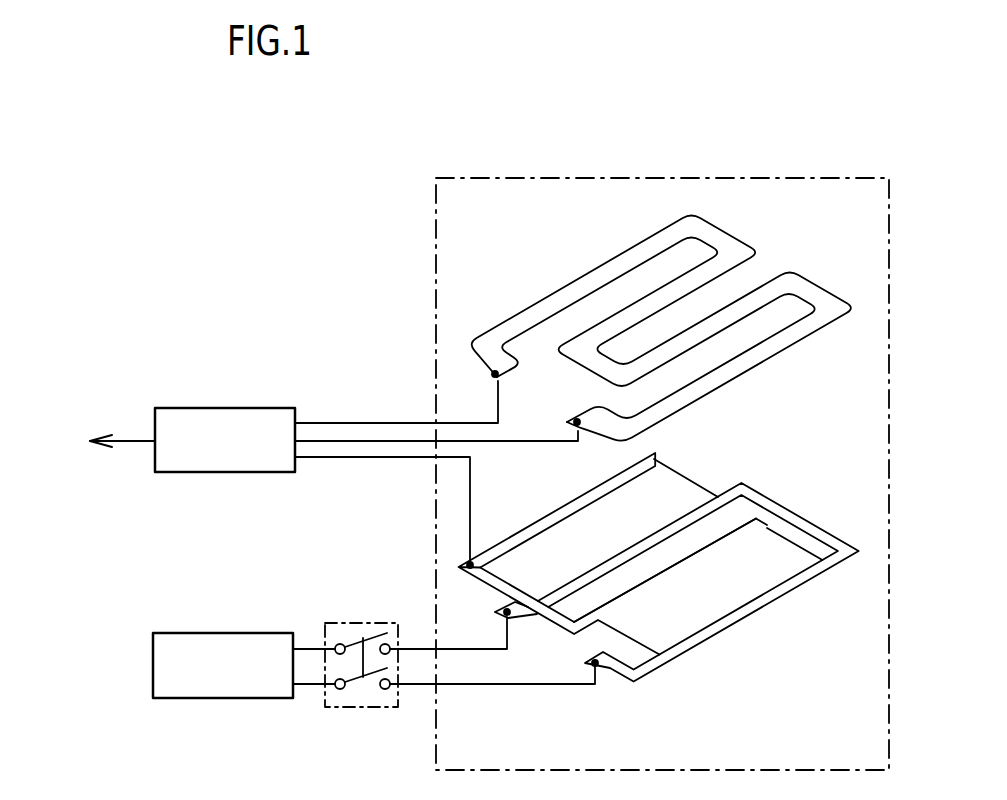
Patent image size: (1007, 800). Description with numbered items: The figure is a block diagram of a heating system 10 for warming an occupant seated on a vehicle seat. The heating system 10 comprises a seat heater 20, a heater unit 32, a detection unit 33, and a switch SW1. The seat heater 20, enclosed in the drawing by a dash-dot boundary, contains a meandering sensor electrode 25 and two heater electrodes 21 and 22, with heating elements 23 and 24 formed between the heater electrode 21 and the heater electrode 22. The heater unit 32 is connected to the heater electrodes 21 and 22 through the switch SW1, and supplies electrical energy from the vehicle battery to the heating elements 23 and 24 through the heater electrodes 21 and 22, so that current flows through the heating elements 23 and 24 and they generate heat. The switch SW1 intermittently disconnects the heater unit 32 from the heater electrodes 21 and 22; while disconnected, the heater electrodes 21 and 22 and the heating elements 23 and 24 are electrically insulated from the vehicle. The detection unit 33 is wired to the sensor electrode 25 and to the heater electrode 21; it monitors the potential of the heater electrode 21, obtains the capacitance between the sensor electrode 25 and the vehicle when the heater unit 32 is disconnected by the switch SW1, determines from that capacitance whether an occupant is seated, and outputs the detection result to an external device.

The heating system 10 is at (250, 253).
The seat heater 20 is at (477, 178).
The heater electrode 21 is at (654, 455).
The heater electrode 22 is at (751, 493).
The heating element 23 is at (691, 493).
The heating element 24 is at (780, 550).
The sensor electrode 25 is at (805, 284).
The heater unit 32 is at (177, 633).
The detection unit 33 is at (173, 407).
The switch SW1 is at (348, 623).